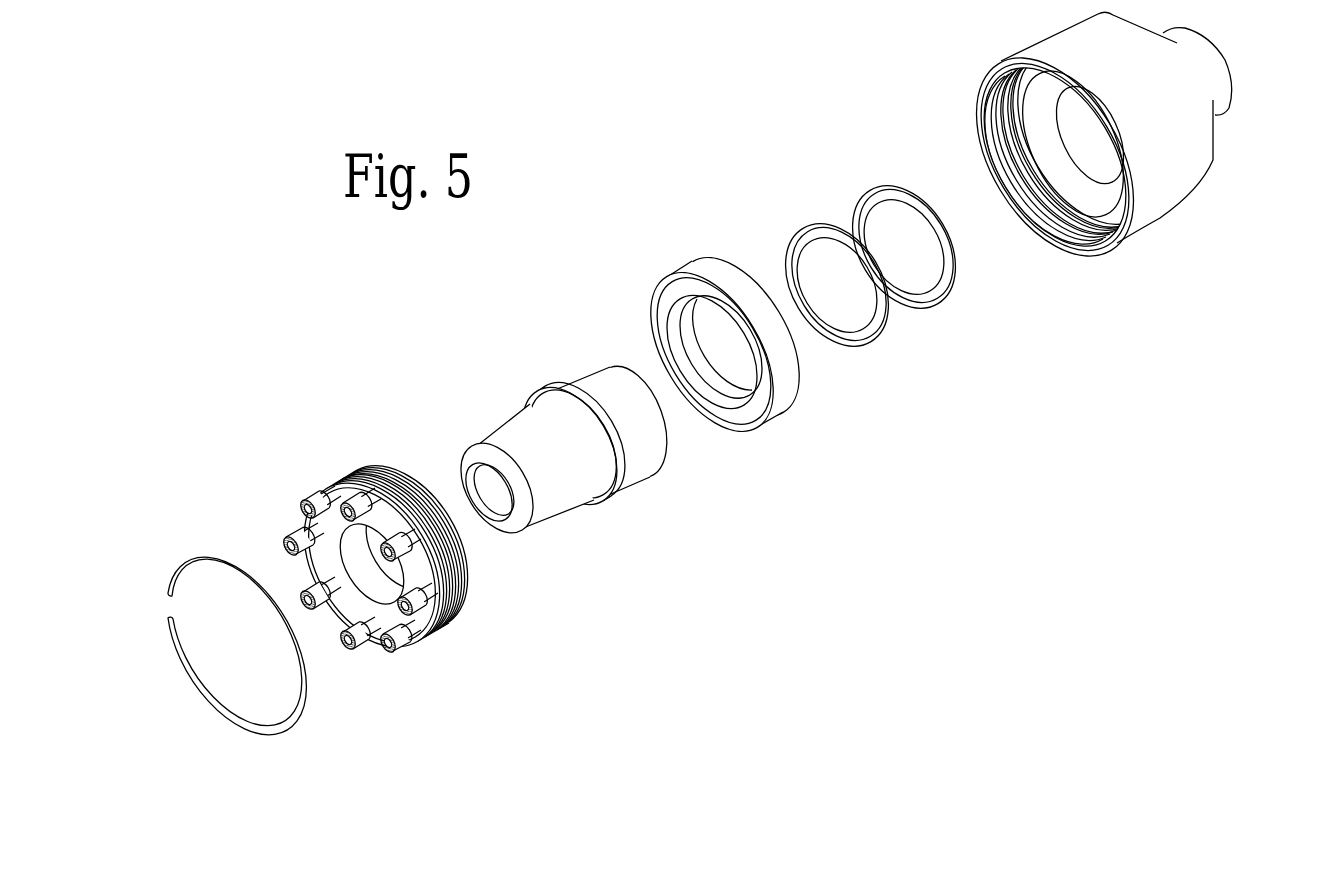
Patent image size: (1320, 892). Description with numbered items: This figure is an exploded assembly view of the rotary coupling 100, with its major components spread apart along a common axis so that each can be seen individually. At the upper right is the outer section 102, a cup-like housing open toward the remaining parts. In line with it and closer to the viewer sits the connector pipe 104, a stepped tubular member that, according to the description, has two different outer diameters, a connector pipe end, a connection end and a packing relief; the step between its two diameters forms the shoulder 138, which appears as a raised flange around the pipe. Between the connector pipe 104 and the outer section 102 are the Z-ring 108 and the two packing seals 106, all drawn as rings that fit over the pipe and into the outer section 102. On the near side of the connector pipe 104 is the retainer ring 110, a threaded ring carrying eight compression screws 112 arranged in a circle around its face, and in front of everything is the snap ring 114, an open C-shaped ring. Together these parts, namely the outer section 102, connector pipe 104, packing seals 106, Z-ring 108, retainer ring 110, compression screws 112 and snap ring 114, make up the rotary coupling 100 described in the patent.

The rotary coupling 100 is at (757, 171).
The outer section 102 is at (1160, 192).
The connector pipe 104 is at (617, 469).
The packing seals 106 is at (937, 297).
The Z-ring 108 is at (780, 418).
The retainer ring 110 is at (467, 590).
The compression screws 112 is at (397, 650).
The snap ring 114 is at (302, 704).
The shoulder 138 is at (610, 488).